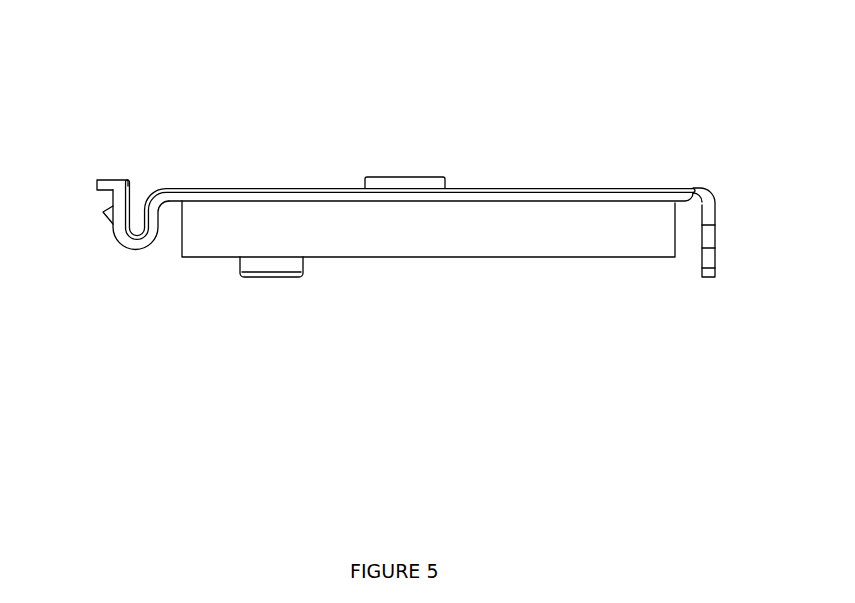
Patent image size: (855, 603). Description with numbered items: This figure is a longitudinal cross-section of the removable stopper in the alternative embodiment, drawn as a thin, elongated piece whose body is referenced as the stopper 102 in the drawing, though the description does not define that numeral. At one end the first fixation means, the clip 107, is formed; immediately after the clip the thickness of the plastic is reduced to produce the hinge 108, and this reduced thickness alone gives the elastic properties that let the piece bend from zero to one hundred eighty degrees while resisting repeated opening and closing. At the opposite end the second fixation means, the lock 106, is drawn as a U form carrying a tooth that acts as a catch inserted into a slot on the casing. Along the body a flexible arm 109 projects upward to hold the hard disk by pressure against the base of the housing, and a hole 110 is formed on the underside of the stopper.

The device body 102 is at (565, 261).
The left mounting clip 106 is at (130, 251).
The right mounting clip 107 is at (716, 228).
The top plate 108 is at (707, 188).
The raised boss 109 is at (405, 176).
The bottom protrusion 110 is at (282, 278).